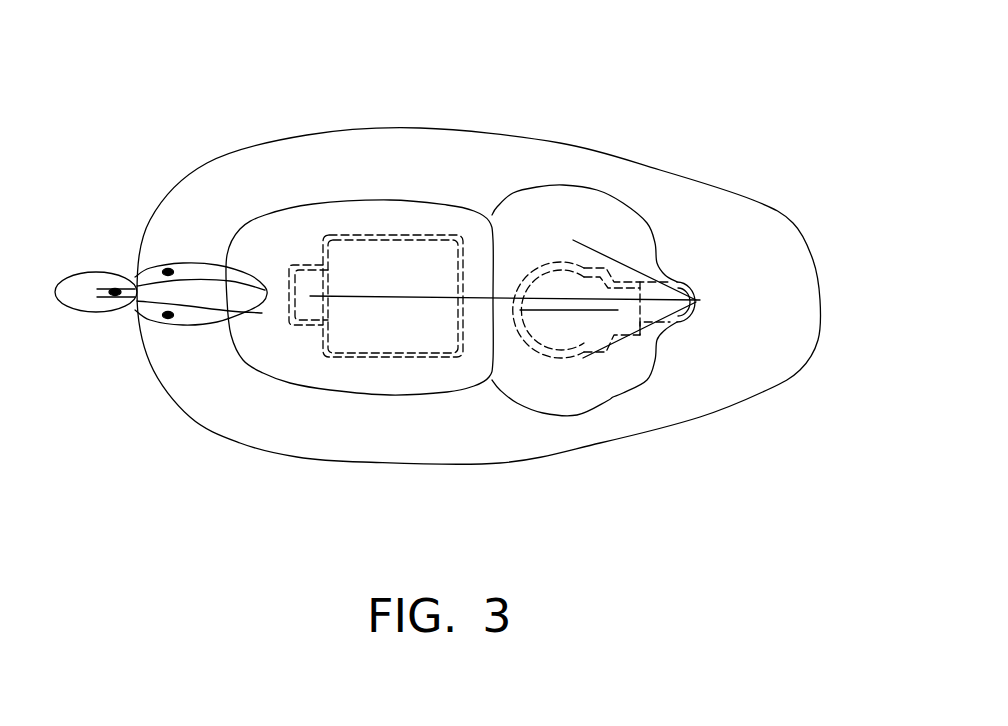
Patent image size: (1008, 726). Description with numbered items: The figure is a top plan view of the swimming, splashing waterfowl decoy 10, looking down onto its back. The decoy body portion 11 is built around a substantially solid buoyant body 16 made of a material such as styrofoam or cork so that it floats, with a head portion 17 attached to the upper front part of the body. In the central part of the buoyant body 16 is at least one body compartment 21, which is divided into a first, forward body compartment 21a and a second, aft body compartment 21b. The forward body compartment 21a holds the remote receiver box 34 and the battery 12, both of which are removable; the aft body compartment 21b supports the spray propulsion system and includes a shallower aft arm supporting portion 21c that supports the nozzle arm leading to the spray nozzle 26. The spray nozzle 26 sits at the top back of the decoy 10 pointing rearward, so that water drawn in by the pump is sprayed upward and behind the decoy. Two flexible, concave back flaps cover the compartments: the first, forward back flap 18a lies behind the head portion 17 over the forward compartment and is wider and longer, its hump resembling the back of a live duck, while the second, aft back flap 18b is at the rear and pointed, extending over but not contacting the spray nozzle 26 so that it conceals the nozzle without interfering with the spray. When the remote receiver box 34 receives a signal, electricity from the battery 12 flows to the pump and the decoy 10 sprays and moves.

The waterfowl decoy 10 is at (779, 102).
The decoy body portion 11 is at (810, 188).
The battery 12 is at (403, 267).
The buoyant body 16 is at (242, 163).
The head portion 17 is at (185, 277).
The first, forward back flap 18a is at (375, 205).
The second, aft back flap 18b is at (622, 265).
The body compartment 21 is at (603, 110).
The first, forward body compartment 21a is at (462, 240).
The second, aft body compartment 21b is at (582, 265).
The aft arm supporting portion 21c is at (633, 317).
The spray nozzle 26 is at (675, 292).
The remote receiver box 34 is at (310, 280).